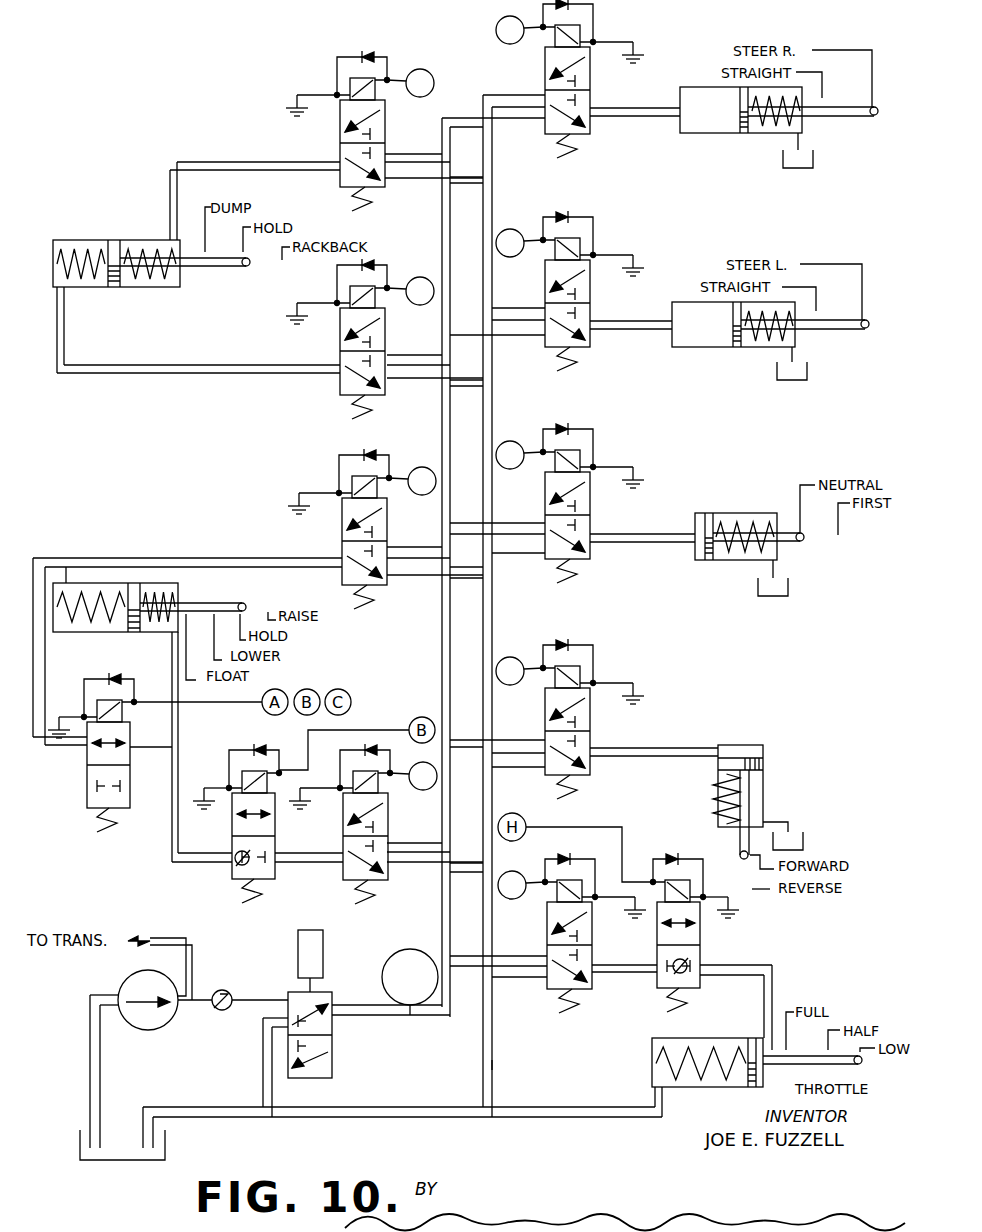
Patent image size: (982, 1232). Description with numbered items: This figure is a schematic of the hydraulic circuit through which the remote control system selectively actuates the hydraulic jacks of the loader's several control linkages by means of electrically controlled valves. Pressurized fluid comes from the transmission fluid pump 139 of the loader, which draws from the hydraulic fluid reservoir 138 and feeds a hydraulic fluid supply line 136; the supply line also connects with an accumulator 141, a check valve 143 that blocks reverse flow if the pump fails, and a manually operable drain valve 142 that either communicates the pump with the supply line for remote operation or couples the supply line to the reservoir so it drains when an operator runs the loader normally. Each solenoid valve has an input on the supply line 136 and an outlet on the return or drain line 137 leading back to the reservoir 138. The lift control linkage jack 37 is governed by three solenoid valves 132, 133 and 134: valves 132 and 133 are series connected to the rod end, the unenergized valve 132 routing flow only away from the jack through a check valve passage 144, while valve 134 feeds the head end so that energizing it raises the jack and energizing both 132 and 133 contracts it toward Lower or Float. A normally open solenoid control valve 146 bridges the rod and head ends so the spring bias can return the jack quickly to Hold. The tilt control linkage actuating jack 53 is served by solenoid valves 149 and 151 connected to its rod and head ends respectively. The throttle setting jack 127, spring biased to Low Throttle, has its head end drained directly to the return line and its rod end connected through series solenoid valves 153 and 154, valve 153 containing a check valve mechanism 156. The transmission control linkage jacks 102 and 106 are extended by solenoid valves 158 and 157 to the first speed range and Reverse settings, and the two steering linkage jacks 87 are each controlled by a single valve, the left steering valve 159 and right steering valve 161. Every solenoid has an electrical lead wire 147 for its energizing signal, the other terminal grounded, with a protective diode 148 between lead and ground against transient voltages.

The lift control linkage jack 37 is at (117, 585).
The tilt control linkage actuating jack 53 is at (145, 246).
The steering linkage jack 87 is at (690, 140).
The transmission control linkage jack 102 is at (761, 511).
The transmission control linkage jack 106 is at (763, 800).
The throttle setting jack 127 is at (652, 1062).
The solenoid valve 132 is at (273, 876).
The solenoid valve 133 is at (386, 874).
The solenoid valve 134 is at (380, 585).
The hydraulic fluid supply line 136 is at (450, 930).
The return or drain line 137 is at (492, 1060).
The hydraulic fluid reservoir 138 is at (168, 1150).
The transmission fluid pump 139 is at (128, 987).
The accumulator 141 is at (398, 1005).
The manually operable drain valve 142 is at (324, 992).
The check valve 143 is at (220, 990).
The check valve passage 144 is at (237, 864).
The solenoid control valve 146 is at (87, 782).
The electrical lead wire 147 is at (391, 78).
The diode 148 is at (344, 58).
The solenoid valve 149 is at (340, 142).
The solenoid valve 151 is at (340, 350).
The solenoid valve 153 is at (698, 942).
The solenoid valve 154 is at (590, 942).
The check valve mechanism 156 is at (688, 973).
The solenoid valve 157 is at (588, 722).
The solenoid valve 158 is at (588, 510).
The left steering valve 159 is at (588, 295).
The right steering valve 161 is at (588, 82).